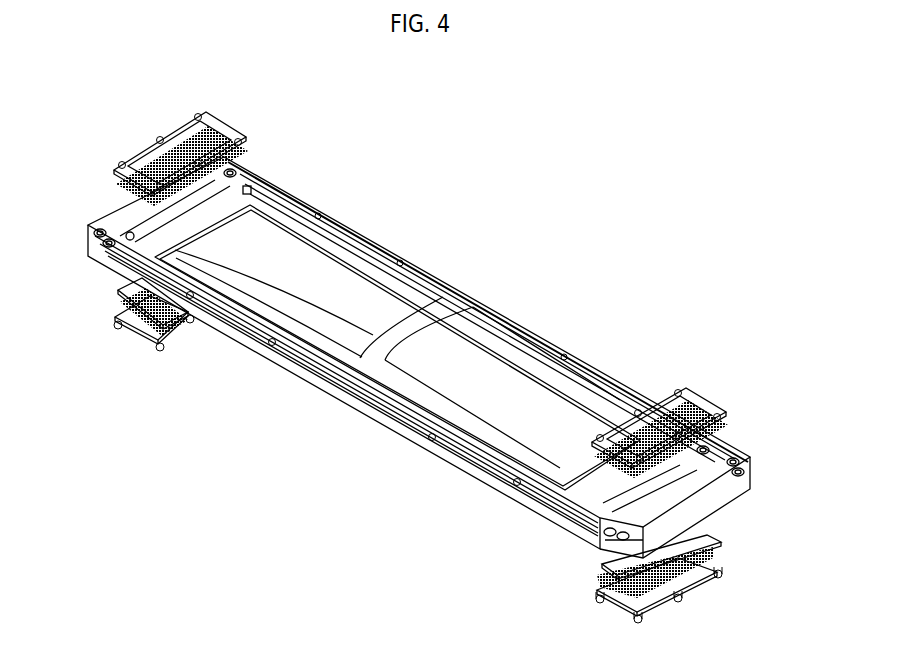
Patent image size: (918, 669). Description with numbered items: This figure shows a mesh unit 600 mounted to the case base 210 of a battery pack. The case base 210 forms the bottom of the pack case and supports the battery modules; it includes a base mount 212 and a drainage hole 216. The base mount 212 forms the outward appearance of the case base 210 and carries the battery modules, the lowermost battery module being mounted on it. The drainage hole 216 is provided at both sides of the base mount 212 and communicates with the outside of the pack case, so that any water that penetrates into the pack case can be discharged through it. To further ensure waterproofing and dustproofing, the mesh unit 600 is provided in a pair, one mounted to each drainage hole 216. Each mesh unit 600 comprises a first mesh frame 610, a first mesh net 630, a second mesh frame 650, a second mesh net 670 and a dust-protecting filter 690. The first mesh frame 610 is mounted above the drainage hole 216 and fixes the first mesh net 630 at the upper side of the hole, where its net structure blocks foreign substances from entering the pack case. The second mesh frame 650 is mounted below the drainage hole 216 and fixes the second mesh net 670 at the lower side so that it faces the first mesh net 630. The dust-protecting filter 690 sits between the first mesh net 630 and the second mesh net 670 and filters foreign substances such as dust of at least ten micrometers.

The case base 210 is at (497, 220).
The base mount 212 is at (380, 372).
The drainage hole 216 is at (127, 238).
The mesh unit 600 is at (226, 126).
The first mesh frame 610 is at (688, 396).
The first mesh net 630 is at (717, 430).
The second mesh frame 650 is at (720, 571).
The second mesh net 670 is at (716, 549).
The dust-protecting filter 690 is at (704, 533).